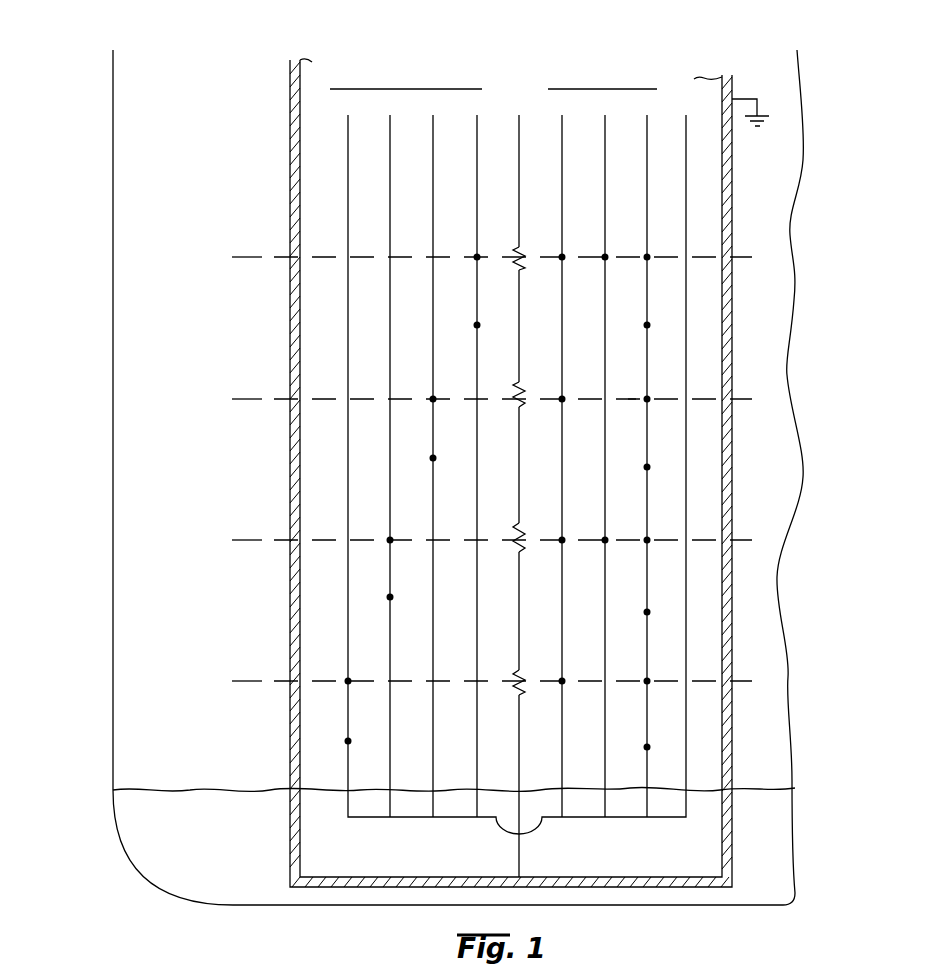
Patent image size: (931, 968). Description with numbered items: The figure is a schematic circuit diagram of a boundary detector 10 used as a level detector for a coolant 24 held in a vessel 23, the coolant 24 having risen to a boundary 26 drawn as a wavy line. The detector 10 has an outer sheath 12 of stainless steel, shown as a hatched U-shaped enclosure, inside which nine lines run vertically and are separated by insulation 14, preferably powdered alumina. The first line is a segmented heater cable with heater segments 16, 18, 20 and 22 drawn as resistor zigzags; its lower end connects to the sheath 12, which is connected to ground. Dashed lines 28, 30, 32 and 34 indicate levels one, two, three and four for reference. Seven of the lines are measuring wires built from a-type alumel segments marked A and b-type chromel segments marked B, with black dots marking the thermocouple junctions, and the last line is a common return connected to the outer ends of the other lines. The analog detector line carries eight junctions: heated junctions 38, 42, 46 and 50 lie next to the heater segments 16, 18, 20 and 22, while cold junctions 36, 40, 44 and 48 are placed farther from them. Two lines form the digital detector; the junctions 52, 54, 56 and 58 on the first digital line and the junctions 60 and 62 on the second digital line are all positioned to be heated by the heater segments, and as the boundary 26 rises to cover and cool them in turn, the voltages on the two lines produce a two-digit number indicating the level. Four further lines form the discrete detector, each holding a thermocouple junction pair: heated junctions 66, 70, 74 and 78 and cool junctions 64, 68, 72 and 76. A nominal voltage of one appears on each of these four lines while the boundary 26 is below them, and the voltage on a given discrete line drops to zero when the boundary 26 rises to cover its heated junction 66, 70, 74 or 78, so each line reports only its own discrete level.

The boundary detector 10 is at (595, 76).
The outer sheath 12 is at (531, 473).
The insulation 14 is at (708, 233).
The heater segment 16 is at (523, 695).
The heater segment 18 is at (523, 547).
The heater segment 20 is at (523, 405).
The heater segment 22 is at (523, 248).
The vessel 23 is at (114, 94).
The coolant 24 is at (236, 848).
The boundary 26 is at (185, 785).
The dashed line 28 is at (232, 678).
The dashed line 30 is at (243, 540).
The dashed line 32 is at (247, 398).
The dashed line 34 is at (245, 253).
The thermocouple junction 36 is at (649, 748).
The thermocouple junction 38 is at (648, 682).
The thermocouple junction 40 is at (649, 612).
The thermocouple junction 42 is at (648, 541).
The thermocouple junction 44 is at (649, 467).
The thermocouple junction 46 is at (648, 400).
The thermocouple junction 48 is at (649, 325).
The thermocouple junction 50 is at (648, 256).
The thermocouple junction 52 is at (563, 682).
The thermocouple junction 54 is at (563, 541).
The thermocouple junction 56 is at (563, 400).
The thermocouple junction 58 is at (563, 256).
The thermocouple junction 60 is at (606, 541).
The thermocouple junction 62 is at (606, 256).
The thermocouple junction 64 is at (349, 740).
The thermocouple junction 66 is at (349, 682).
The thermocouple junction 68 is at (392, 597).
The thermocouple junction 70 is at (391, 541).
The thermocouple junction 72 is at (435, 458).
The thermocouple junction 74 is at (434, 400).
The thermocouple junction 76 is at (479, 325).
The thermocouple junction 78 is at (478, 256).